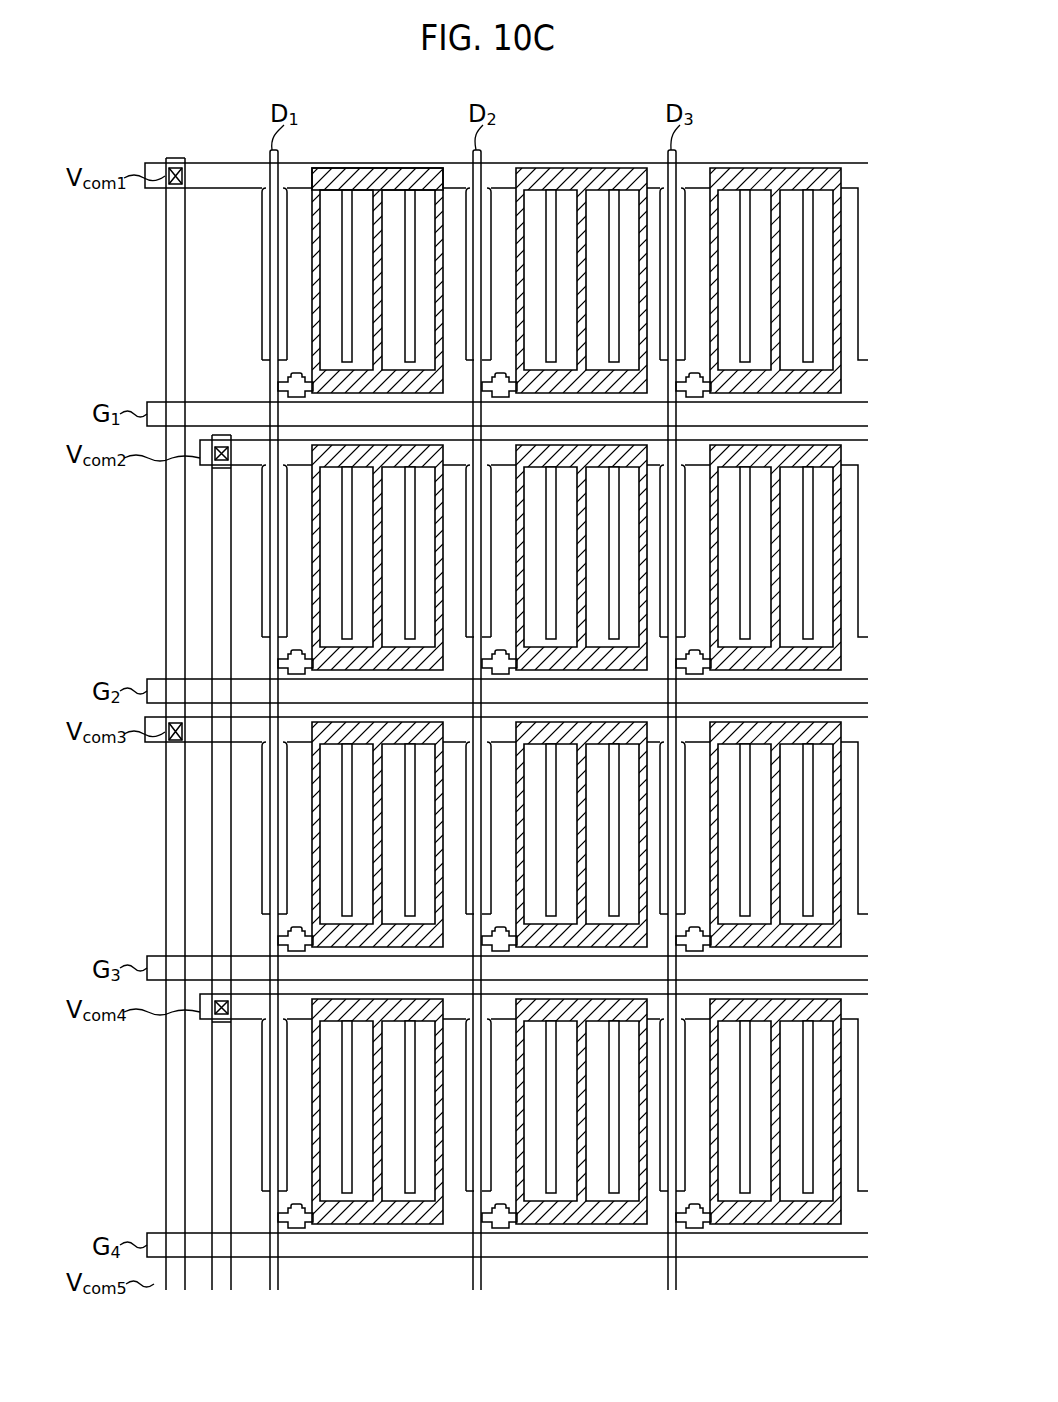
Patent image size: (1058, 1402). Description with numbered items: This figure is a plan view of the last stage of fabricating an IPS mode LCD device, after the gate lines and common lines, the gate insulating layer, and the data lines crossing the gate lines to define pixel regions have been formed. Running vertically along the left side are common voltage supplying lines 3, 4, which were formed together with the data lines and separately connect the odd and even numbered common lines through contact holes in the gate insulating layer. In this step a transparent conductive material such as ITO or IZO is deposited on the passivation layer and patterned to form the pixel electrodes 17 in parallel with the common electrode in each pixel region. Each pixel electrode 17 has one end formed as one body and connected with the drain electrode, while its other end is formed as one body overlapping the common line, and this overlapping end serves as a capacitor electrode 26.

The third common voltage supplying line 3 is at (166, 291).
The fourth common voltage supplying line 4 is at (212, 563).
The pixel electrode 17 is at (313, 246).
The capacitor electrode 26 is at (386, 168).